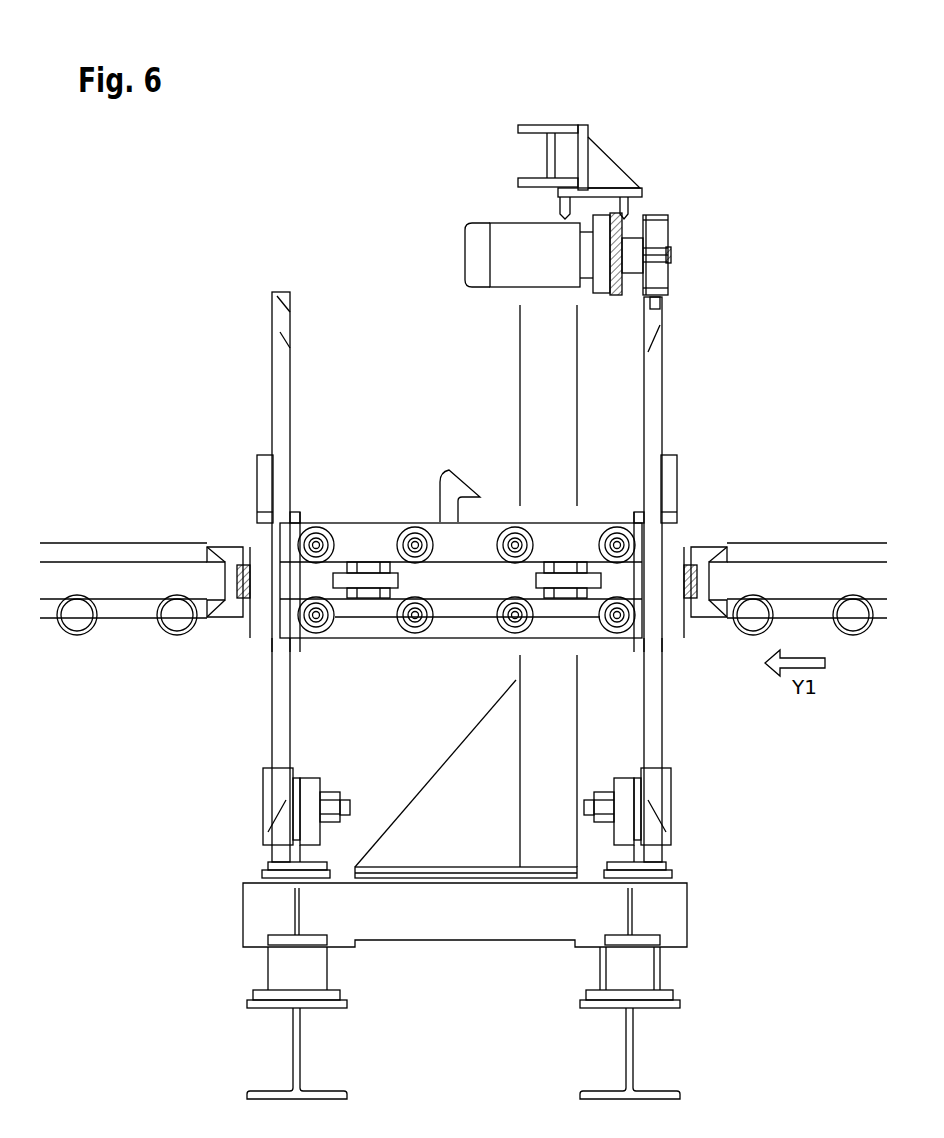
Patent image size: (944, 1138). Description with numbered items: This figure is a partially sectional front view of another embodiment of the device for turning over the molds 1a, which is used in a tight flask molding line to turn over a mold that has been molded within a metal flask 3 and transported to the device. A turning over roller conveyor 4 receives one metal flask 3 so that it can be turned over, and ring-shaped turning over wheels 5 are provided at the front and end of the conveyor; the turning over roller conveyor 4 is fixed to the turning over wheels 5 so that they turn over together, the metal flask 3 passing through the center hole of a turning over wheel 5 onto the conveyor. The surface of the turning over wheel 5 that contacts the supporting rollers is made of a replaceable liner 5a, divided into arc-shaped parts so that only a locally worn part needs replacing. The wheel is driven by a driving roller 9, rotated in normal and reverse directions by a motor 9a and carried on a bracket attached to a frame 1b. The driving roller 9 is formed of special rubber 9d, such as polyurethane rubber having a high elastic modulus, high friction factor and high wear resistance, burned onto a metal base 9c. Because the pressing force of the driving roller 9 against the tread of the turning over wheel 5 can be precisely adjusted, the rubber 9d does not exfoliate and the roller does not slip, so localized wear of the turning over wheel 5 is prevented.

The device for turning over the molds 1a is at (637, 121).
The frame 1b is at (545, 125).
The metal flask 3 is at (80, 560).
The turning over roller conveyor 4 is at (350, 522).
The turning over wheel 5 is at (503, 540).
The liner 5a is at (663, 300).
The driving roller 9 is at (616, 183).
The motor 9a is at (497, 225).
The metal base 9c is at (664, 228).
The special rubber 9d is at (655, 215).